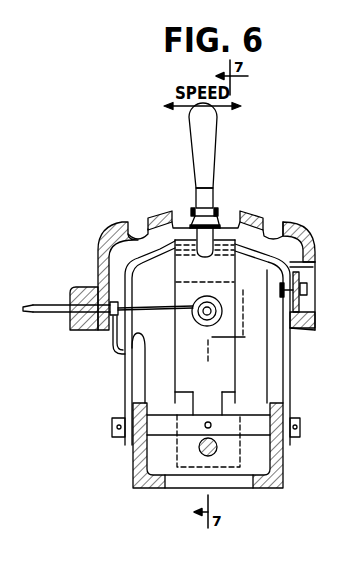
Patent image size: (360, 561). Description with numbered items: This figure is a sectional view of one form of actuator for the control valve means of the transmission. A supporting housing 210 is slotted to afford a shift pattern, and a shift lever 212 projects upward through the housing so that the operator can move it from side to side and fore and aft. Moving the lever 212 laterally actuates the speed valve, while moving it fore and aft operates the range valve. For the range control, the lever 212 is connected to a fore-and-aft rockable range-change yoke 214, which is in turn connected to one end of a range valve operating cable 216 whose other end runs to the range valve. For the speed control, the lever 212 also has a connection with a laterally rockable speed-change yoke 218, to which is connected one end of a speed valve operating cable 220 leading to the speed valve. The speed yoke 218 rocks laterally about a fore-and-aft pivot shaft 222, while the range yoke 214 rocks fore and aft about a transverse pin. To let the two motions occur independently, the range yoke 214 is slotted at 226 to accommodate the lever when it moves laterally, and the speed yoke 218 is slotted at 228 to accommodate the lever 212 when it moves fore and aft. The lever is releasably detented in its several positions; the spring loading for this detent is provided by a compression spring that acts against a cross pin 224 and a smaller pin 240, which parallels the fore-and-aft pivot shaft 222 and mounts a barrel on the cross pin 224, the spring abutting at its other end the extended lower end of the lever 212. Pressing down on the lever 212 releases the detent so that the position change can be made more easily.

The supporting housing 210 is at (301, 243).
The shift lever 212 is at (214, 133).
The range-change yoke 214 is at (288, 357).
The range valve operating cable 216 is at (297, 269).
The speed-change yoke 218 is at (175, 327).
The speed valve operating cable 220 is at (27, 313).
The fore-and-aft pivot shaft 222 is at (214, 455).
The cross pin 224 is at (301, 420).
The slot of range yoke 226 is at (209, 234).
The slot of speed yoke 228 is at (206, 258).
The smaller pin 240 is at (207, 421).